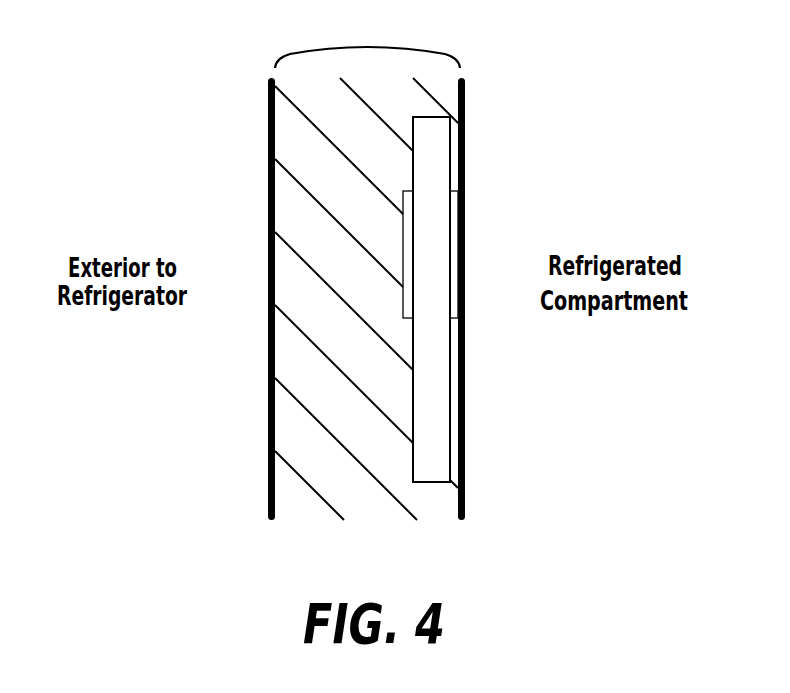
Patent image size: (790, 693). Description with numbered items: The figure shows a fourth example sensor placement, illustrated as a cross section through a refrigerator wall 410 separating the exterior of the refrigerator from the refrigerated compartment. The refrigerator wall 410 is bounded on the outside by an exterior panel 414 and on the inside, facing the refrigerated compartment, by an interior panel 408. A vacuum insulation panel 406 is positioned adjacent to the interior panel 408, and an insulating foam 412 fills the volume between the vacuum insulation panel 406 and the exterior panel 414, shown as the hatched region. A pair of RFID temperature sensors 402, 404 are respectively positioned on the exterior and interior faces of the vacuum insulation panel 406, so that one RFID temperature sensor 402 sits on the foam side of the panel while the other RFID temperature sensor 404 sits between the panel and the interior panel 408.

The RFID temperature sensor 402 is at (410, 228).
The RFID temperature sensor 404 is at (453, 247).
The vacuum insulation panel 406 is at (433, 382).
The interior panel 408 is at (465, 513).
The refrigerator wall 410 is at (297, 52).
The insulating foam 412 is at (340, 250).
The exterior panel 414 is at (267, 507).